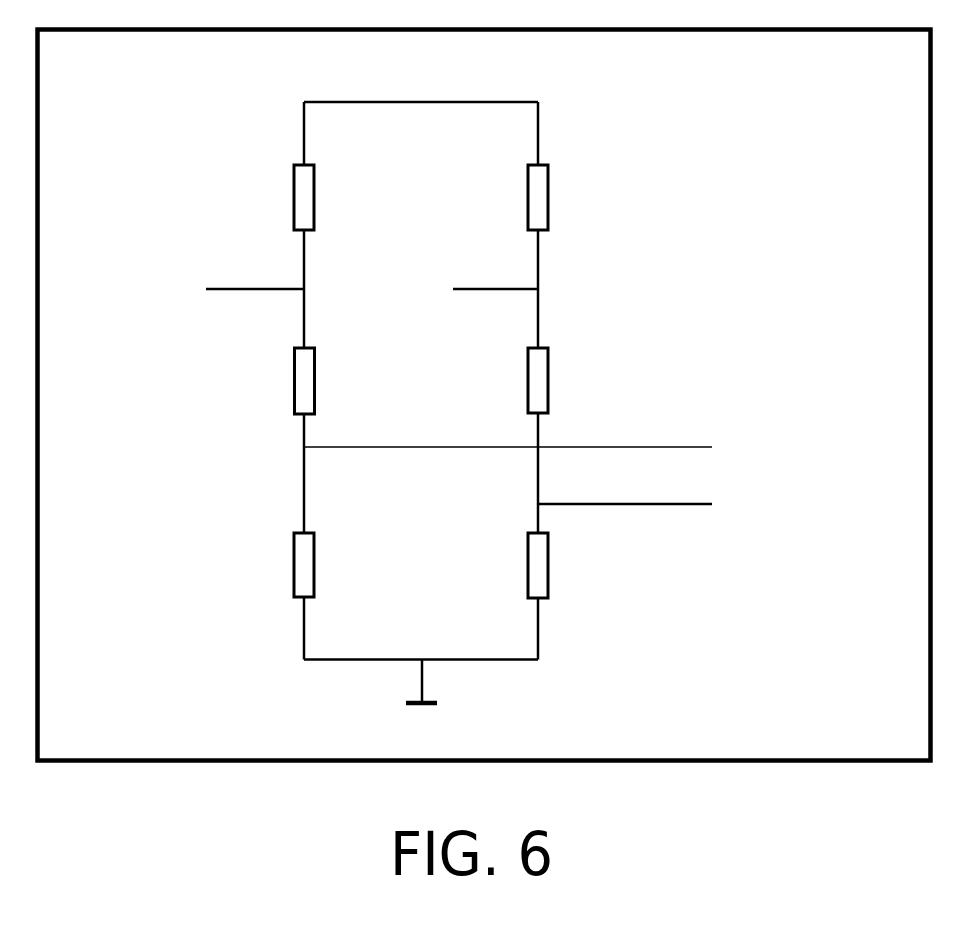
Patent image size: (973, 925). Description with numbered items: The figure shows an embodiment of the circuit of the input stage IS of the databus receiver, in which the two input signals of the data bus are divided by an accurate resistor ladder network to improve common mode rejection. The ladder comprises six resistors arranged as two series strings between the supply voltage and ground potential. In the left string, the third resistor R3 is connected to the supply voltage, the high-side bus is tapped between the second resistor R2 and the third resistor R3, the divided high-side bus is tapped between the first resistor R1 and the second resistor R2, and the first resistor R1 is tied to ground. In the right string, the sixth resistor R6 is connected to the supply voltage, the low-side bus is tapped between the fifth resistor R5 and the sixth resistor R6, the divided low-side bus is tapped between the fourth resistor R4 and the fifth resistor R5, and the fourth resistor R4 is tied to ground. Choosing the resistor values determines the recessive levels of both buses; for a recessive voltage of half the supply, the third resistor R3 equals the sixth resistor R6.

The input stage IS is at (183, 688).
The first resistor R1 is at (272, 576).
The second resistor R2 is at (270, 397).
The third resistor R3 is at (270, 209).
The fourth resistor R4 is at (506, 576).
The fifth resistor R5 is at (505, 397).
The sixth resistor R6 is at (505, 209).